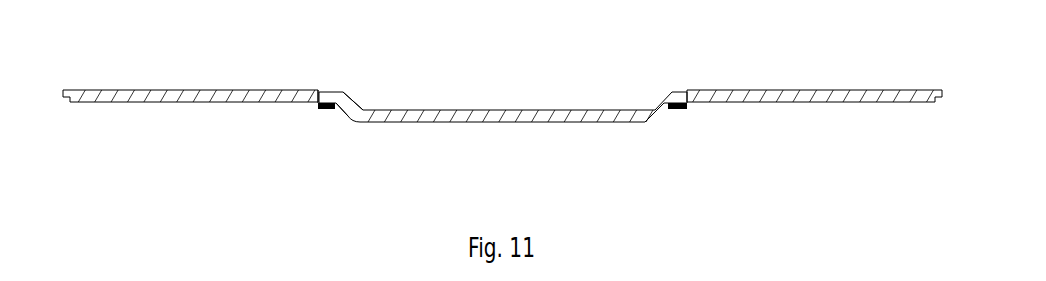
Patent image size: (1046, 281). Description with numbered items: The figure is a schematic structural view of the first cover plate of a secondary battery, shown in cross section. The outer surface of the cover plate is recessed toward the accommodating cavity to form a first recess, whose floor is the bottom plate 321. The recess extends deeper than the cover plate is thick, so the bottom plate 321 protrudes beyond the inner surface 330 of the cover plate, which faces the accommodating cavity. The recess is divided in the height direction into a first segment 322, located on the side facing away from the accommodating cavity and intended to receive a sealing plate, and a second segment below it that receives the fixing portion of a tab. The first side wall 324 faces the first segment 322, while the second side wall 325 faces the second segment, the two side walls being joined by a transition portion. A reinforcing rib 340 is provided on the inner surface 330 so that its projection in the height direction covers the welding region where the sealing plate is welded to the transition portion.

The bottom plate 321 is at (502, 123).
The first segment 322 is at (659, 67).
The first side wall 324 is at (333, 75).
The second side wall 325 is at (376, 92).
The inner surface 330 is at (183, 127).
The reinforcing rib 340 is at (318, 108).